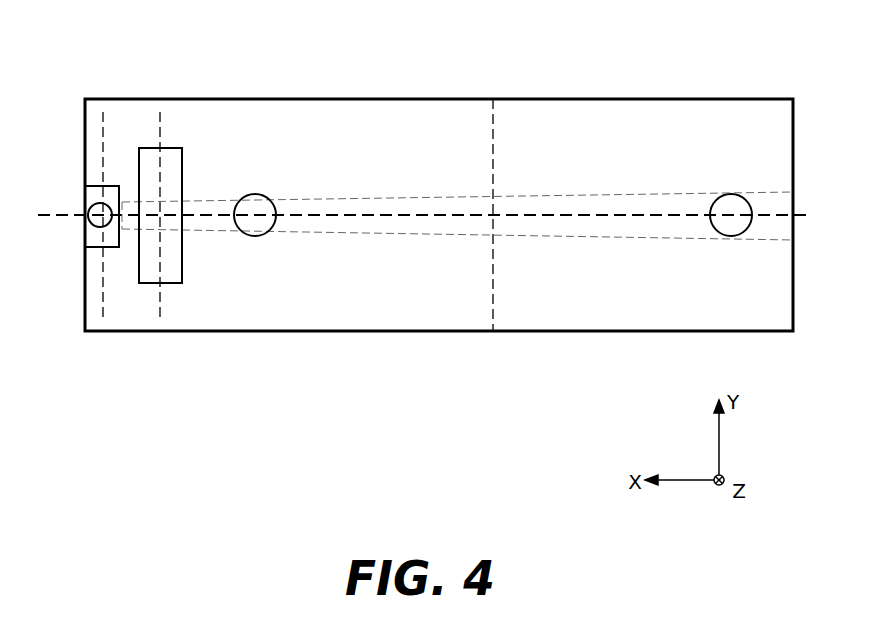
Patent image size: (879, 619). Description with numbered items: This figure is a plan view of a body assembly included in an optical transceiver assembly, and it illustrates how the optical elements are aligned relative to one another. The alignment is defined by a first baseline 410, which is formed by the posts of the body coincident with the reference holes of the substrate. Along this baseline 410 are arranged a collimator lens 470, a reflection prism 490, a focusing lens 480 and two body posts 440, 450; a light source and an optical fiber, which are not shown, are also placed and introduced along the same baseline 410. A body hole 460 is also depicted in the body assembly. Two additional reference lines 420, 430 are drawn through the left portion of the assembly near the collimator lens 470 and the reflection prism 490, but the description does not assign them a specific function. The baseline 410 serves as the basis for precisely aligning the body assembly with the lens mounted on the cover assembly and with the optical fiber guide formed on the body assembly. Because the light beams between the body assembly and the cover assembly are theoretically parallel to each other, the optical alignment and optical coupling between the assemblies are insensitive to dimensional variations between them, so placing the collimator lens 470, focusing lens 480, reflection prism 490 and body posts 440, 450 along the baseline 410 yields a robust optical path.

The first baseline 410 is at (548, 215).
The first reference plane line 420 is at (103, 127).
The second reference plane line 430 is at (160, 128).
The body post 440 is at (255, 194).
The body post 450 is at (731, 194).
The body hole 460 is at (174, 283).
The collimator lens 470 is at (95, 226).
The focusing lens 480 is at (137, 205).
The reflection prism 490 is at (85, 194).